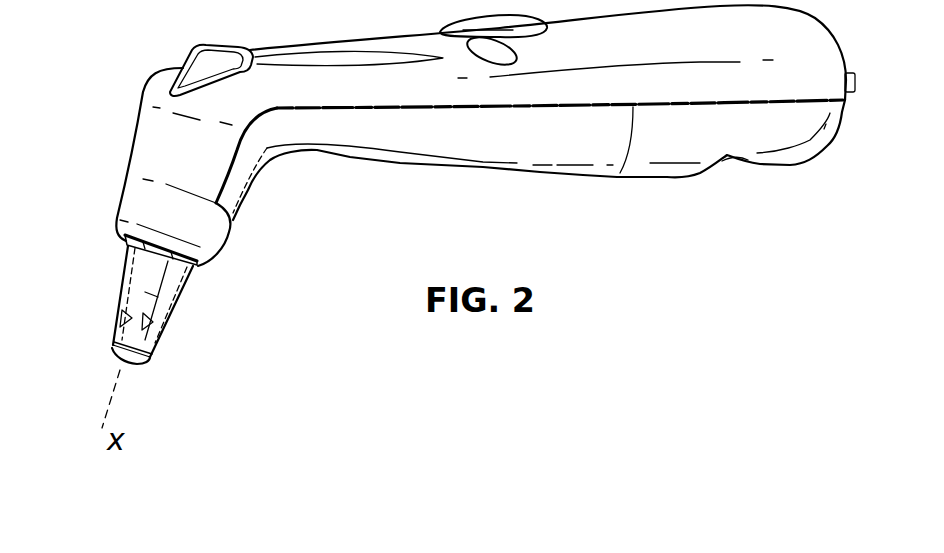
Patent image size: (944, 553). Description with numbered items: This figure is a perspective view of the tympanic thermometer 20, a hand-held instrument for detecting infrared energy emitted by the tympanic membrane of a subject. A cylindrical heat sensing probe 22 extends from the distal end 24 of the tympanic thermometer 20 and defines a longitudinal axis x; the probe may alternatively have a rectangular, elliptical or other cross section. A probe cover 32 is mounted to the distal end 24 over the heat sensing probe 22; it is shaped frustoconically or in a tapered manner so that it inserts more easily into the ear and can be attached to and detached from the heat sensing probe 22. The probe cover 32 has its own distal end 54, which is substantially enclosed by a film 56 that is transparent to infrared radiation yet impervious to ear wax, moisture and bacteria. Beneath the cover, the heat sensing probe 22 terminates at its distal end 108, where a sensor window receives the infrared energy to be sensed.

The tympanic thermometer 20 is at (592, 192).
The heat sensing probe 22 is at (170, 302).
The distal end 24 is at (121, 199).
The probe cover 32 is at (126, 253).
The distal end 54 is at (150, 360).
The film 56 is at (115, 355).
The distal end 108 is at (113, 343).